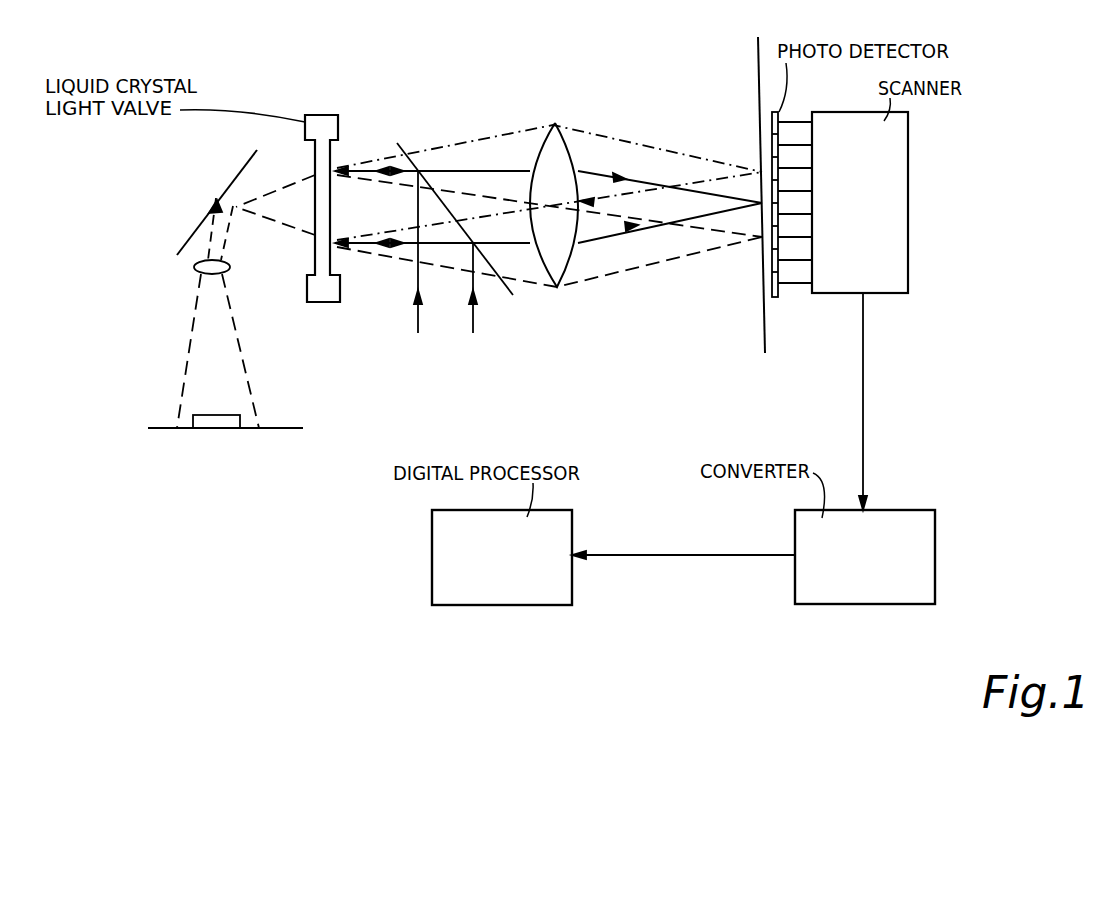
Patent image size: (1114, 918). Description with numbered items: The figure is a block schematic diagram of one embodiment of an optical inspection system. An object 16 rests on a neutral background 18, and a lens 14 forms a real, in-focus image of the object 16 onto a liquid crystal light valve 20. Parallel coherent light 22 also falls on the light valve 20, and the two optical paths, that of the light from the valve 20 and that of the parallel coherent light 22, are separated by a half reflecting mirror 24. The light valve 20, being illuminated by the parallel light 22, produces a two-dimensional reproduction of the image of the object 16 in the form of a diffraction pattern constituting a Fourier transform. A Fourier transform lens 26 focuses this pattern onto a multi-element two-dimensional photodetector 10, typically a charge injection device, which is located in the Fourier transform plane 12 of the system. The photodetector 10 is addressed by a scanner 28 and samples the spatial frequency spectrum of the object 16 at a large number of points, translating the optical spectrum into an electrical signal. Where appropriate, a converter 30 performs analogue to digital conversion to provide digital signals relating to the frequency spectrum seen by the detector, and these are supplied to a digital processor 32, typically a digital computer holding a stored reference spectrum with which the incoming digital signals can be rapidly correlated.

The photodetector 10 is at (781, 297).
The Fourier transform plane 12 is at (765, 353).
The lens 14 is at (200, 270).
The object 16 is at (222, 422).
The neutral background 18 is at (285, 430).
The liquid crystal light valve 20 is at (323, 118).
The parallel coherent light 22 is at (475, 310).
The half reflecting mirror 24 is at (236, 180).
The Fourier transform lens 26 is at (565, 136).
The scanner 28 is at (902, 148).
The converter 30 is at (886, 570).
The digital processor 32 is at (514, 569).